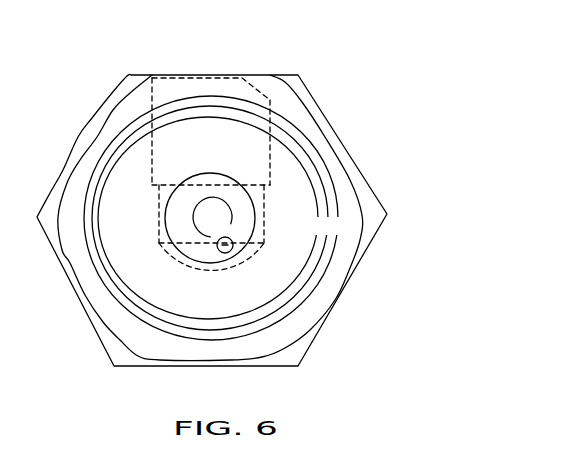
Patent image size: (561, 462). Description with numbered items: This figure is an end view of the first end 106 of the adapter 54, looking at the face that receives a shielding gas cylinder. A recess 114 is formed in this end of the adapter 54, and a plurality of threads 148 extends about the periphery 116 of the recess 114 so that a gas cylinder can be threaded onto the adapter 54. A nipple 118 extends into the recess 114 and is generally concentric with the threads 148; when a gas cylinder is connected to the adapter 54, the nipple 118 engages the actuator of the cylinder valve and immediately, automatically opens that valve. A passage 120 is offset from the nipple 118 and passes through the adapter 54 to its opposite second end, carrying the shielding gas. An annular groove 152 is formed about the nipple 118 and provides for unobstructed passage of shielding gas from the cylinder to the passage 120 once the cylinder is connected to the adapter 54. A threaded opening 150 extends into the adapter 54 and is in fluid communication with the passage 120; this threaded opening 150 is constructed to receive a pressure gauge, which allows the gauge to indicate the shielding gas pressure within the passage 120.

The adapter 54 is at (300, 75).
The first end 106 is at (353, 118).
The recess 114 is at (282, 284).
The periphery 116 is at (310, 247).
The nipple 118 is at (203, 232).
The passage 120 is at (226, 254).
The threads 148 is at (322, 268).
The threaded opening 150 is at (236, 75).
The annular groove 152 is at (178, 223).